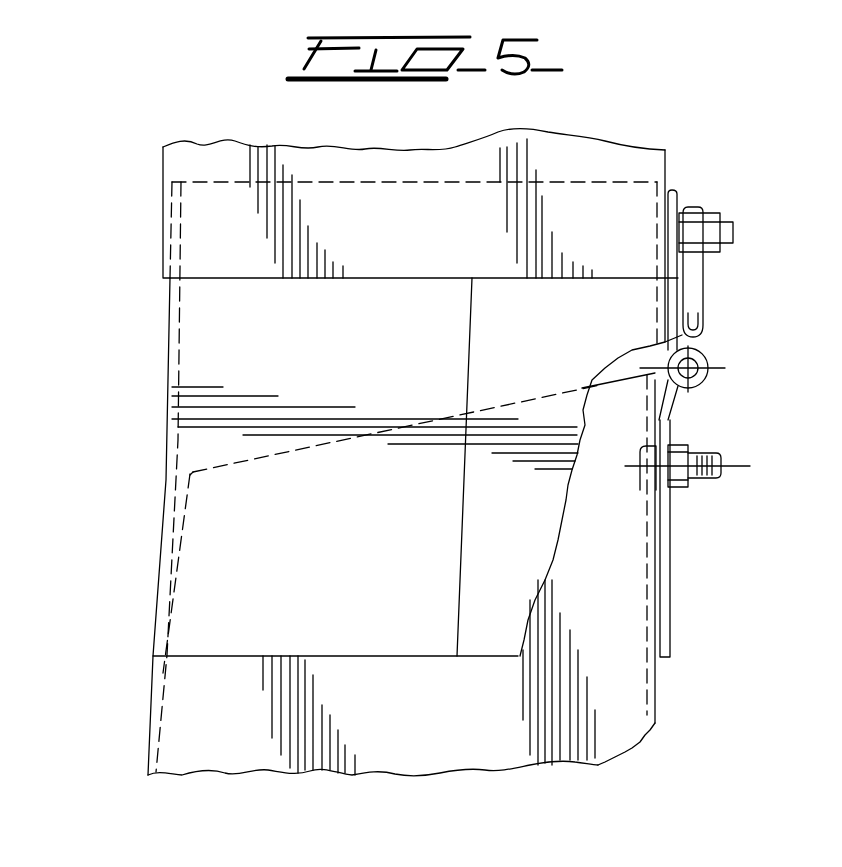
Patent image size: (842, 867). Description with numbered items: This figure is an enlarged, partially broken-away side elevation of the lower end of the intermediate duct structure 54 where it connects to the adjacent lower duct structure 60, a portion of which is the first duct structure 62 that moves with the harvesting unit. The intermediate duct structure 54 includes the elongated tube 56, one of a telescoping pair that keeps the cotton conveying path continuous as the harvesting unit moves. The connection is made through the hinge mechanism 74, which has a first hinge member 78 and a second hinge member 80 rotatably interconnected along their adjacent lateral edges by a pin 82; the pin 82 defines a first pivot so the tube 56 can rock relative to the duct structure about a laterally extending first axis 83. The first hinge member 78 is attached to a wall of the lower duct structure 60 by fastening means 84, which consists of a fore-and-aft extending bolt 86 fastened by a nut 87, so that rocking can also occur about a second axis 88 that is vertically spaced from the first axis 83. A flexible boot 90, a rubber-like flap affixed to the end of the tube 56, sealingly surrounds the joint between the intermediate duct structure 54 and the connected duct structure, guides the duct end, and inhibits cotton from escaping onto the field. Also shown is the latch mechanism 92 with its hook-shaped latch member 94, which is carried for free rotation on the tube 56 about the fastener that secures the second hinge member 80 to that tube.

The intermediate duct structure 54 is at (622, 126).
The elongated tube 56 is at (178, 165).
The lower duct structure 60 is at (628, 755).
The first duct structure 62 is at (620, 690).
The hinge mechanism 74 is at (732, 384).
The first hinge member 78 is at (660, 510).
The second hinge member 80 is at (672, 262).
The pin 82 is at (702, 378).
The first axis 83 is at (705, 356).
The fastening means 84 is at (689, 490).
The bolt 86 is at (714, 480).
The nut 87 is at (662, 486).
The second axis 88 is at (735, 463).
The flexible boot 90 is at (197, 358).
The latch mechanism 92 is at (732, 274).
The latch member 94 is at (702, 292).